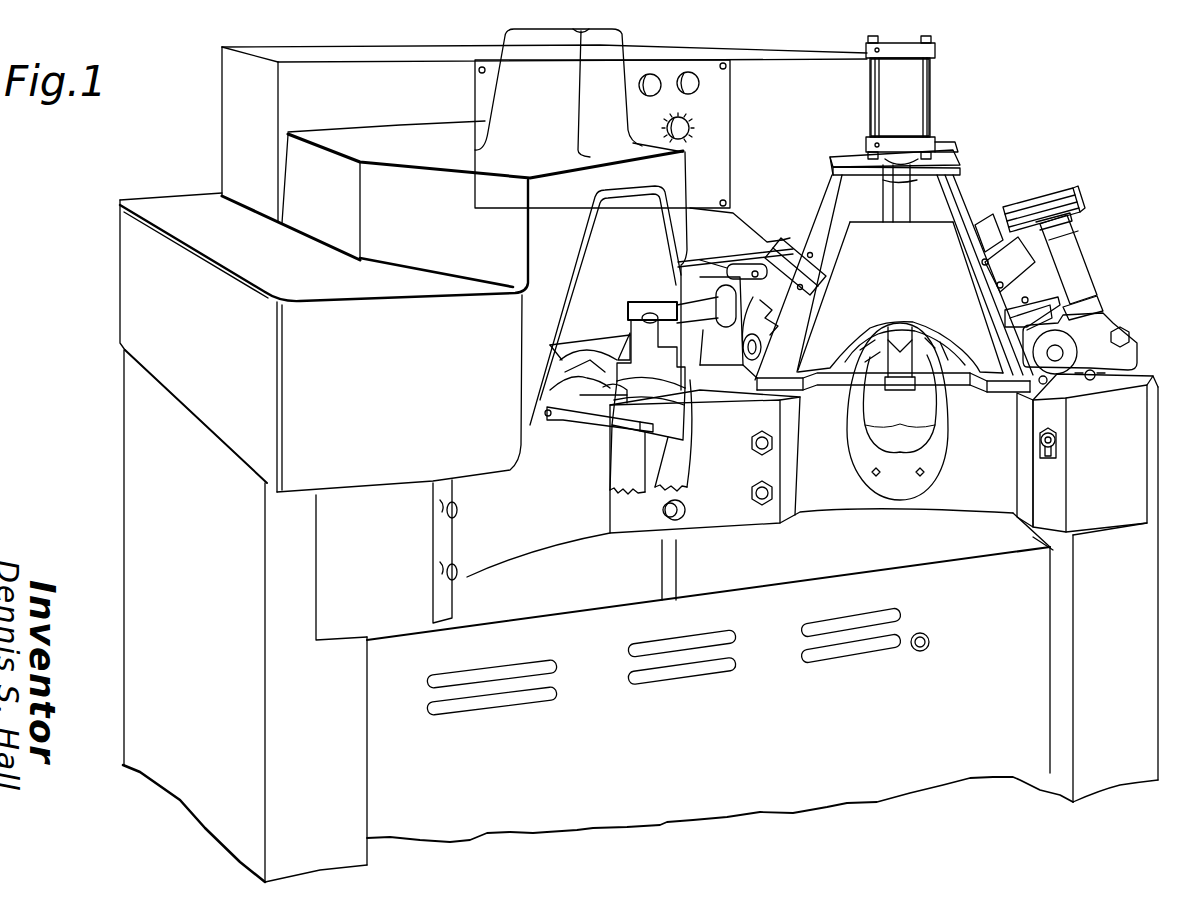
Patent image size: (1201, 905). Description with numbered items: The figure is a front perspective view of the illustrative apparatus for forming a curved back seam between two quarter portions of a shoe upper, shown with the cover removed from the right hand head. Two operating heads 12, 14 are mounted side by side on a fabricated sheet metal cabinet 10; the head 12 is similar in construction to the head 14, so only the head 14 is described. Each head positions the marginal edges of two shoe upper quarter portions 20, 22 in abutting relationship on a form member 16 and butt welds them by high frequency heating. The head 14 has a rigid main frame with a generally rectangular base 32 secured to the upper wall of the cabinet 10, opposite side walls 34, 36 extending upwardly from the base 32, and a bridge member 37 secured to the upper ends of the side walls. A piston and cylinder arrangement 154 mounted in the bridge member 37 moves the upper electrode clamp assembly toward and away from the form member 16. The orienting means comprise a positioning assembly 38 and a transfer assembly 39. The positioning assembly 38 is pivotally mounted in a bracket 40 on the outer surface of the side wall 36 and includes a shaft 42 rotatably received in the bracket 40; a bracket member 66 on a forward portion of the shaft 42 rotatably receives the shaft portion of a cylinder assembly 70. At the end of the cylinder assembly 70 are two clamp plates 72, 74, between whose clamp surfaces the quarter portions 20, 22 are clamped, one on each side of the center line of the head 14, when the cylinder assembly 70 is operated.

The fabricated sheet metal cabinet 10 is at (145, 510).
The operating head 12 is at (386, 140).
The operating head 14 is at (942, 95).
The piston and cylinder arrangement 154 is at (888, 103).
The bridge member 37 is at (830, 157).
The side wall 34 is at (822, 202).
The side wall 36 is at (957, 192).
The base 32 is at (1000, 388).
The form member 16 is at (527, 423).
The transfer assembly 39 is at (582, 430).
The shoe upper quarter portion 20 is at (613, 480).
The shoe upper quarter portion 22 is at (683, 472).
The clamp plate 72 is at (1063, 193).
The clamp plate 74 is at (1078, 207).
The positioning assembly 38 is at (1083, 242).
The cylinder assembly 70 is at (1080, 275).
The bracket 40 is at (1020, 317).
The bracket member 66 is at (1103, 330).
The shaft 42 is at (1055, 355).